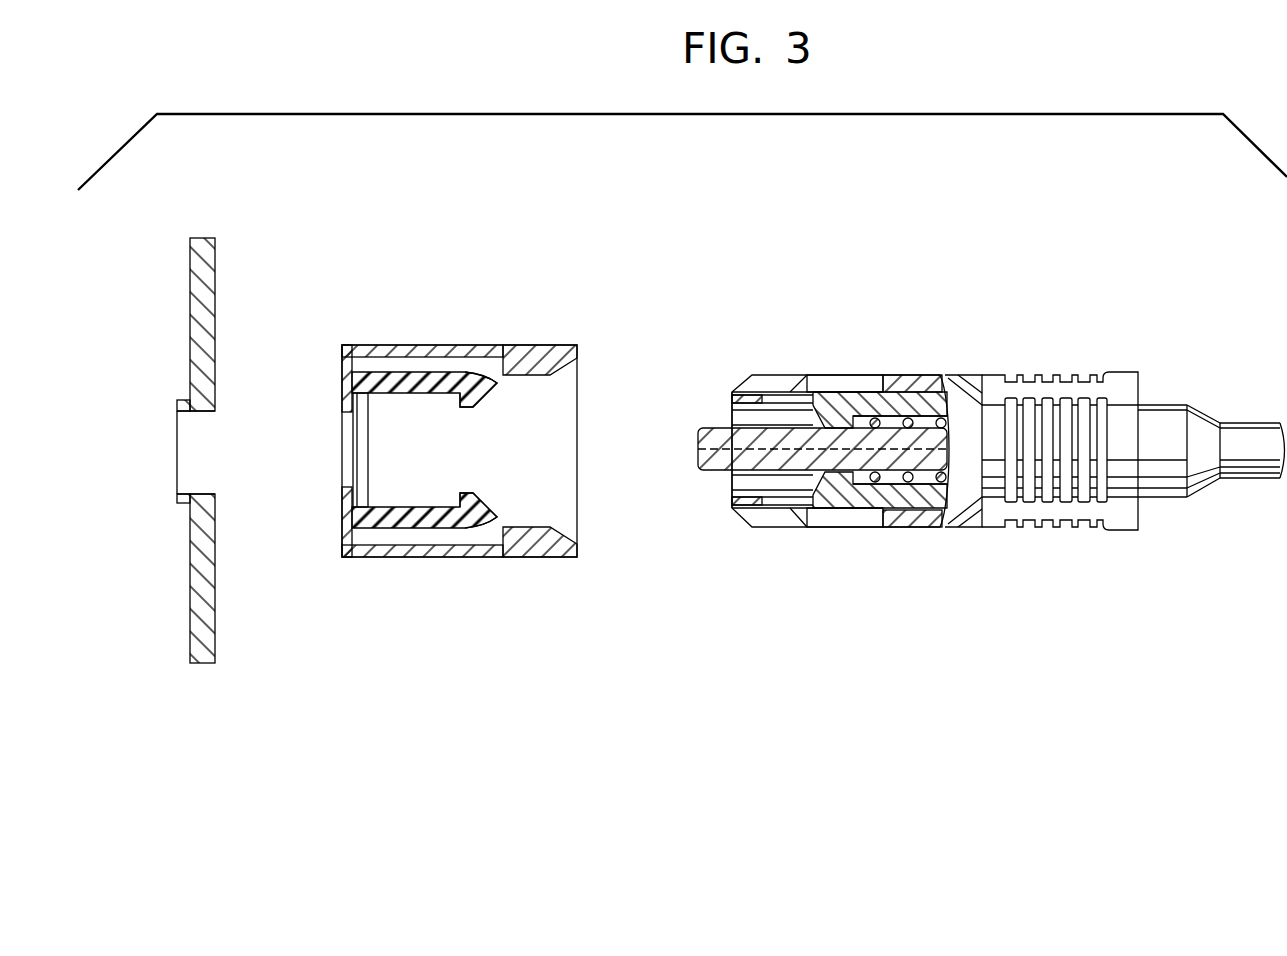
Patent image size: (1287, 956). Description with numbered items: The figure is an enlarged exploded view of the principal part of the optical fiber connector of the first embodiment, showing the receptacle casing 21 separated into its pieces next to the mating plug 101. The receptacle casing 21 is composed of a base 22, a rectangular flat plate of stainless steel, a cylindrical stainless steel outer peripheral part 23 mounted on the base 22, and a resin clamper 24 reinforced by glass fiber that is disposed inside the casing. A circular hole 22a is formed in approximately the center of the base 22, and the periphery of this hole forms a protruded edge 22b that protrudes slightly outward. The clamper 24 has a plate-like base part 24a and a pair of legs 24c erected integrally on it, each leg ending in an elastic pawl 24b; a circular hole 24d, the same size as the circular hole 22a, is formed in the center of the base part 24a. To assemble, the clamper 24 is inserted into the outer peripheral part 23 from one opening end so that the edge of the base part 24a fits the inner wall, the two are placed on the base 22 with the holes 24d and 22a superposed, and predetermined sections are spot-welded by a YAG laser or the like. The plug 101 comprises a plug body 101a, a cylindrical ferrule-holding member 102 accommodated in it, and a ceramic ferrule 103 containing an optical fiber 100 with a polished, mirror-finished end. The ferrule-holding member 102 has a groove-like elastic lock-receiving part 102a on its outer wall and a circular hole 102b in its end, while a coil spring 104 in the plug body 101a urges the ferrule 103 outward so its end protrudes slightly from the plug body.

The receptacle casing 21 is at (228, 330).
The base 22 is at (189, 648).
The circular hole 22a is at (177, 494).
The protruded edge 22b is at (177, 403).
The outer peripheral part 23 is at (452, 348).
The clamper 24 is at (418, 507).
The base part 24a is at (342, 522).
The elastic pawl 24b is at (478, 404).
The legs 24c is at (422, 396).
The circular hole 24d is at (342, 420).
The optical fiber 100 is at (700, 447).
The plug 101 is at (958, 429).
The plug body 101a is at (935, 530).
The ferrule-holding member 102 is at (870, 388).
The elastic lock-receiving part 102a is at (838, 388).
The circular hole 102b is at (732, 415).
The ferrule 103 is at (735, 478).
The coil spring 104 is at (907, 388).